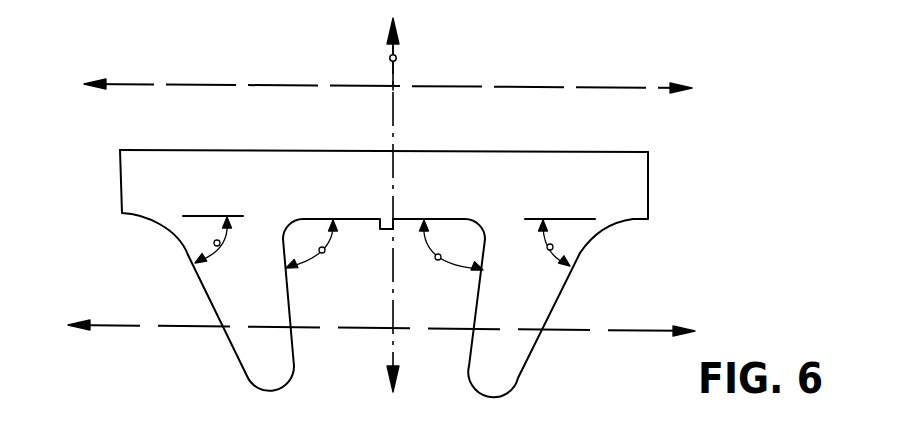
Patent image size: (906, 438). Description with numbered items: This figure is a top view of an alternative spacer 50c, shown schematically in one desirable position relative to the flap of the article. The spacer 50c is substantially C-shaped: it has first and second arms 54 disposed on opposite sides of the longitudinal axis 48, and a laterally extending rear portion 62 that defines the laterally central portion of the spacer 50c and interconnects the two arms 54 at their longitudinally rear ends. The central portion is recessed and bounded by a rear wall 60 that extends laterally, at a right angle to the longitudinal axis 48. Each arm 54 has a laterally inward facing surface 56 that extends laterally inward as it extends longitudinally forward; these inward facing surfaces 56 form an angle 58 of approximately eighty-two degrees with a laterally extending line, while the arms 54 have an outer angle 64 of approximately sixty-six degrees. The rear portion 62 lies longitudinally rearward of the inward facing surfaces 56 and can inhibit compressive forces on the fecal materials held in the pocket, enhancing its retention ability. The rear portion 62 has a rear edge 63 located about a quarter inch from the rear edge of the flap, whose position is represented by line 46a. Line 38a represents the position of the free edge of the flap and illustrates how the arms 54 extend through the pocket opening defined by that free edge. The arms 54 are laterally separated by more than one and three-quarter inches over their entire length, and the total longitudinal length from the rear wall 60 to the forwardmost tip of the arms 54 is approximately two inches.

The line representing position of free edge 38a is at (645, 331).
The line representing position of rear edge of the flap 46a is at (550, 86).
The longitudinal axis 48 is at (388, 58).
The spacer 50c is at (135, 216).
The arms 54 is at (225, 302).
The laterally inward facing surface 56 is at (290, 300).
The angle 58 is at (328, 254).
The rear wall 60 is at (356, 218).
The rear portion 62 is at (370, 172).
The rear edge 63 is at (255, 150).
The outer angle 64 is at (220, 248).